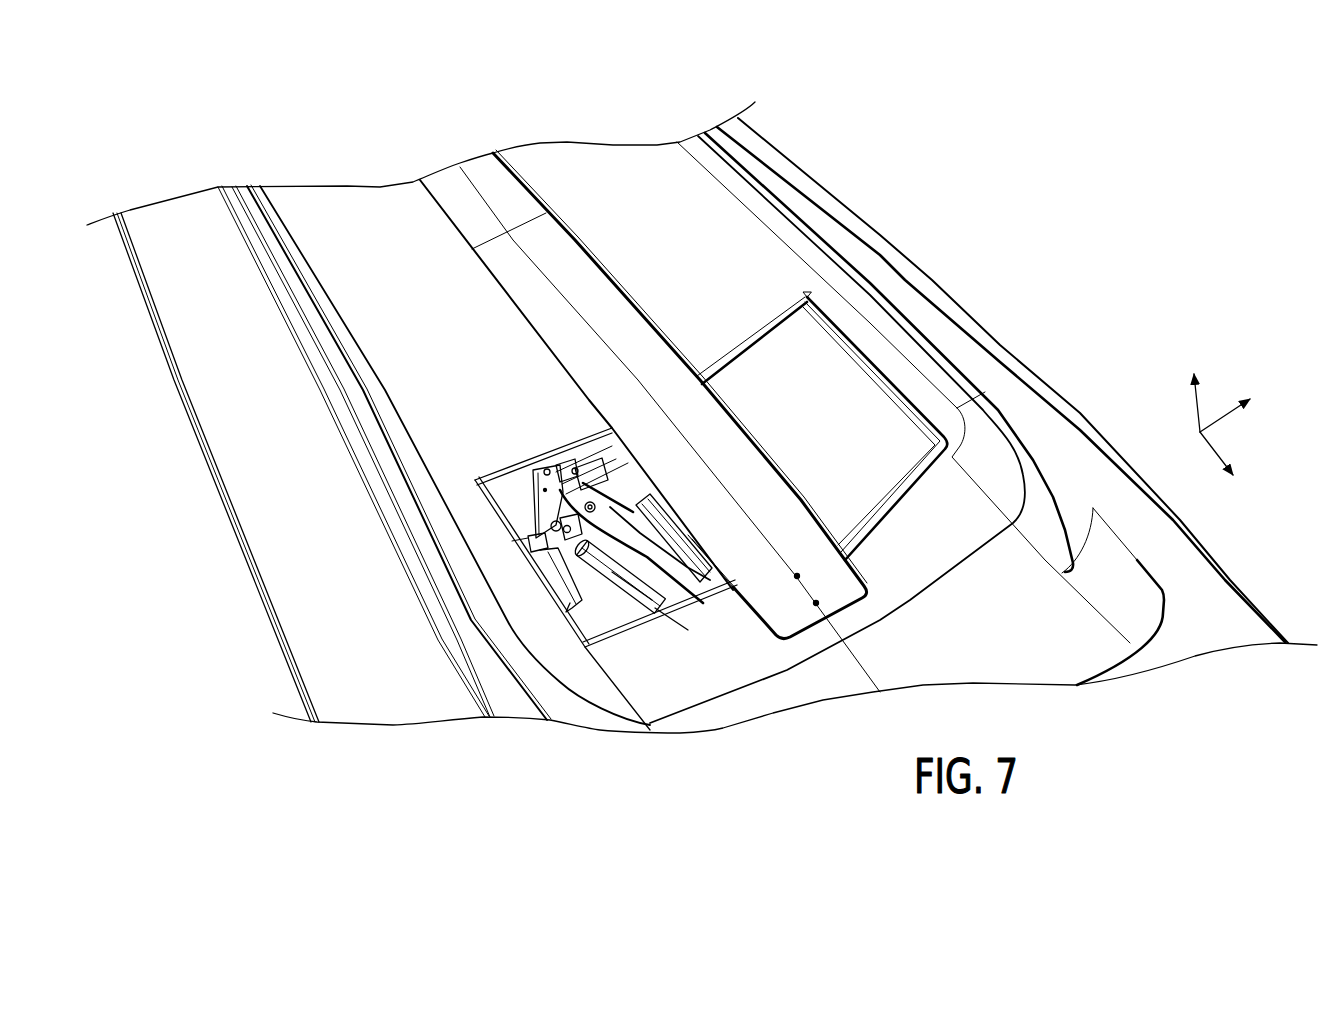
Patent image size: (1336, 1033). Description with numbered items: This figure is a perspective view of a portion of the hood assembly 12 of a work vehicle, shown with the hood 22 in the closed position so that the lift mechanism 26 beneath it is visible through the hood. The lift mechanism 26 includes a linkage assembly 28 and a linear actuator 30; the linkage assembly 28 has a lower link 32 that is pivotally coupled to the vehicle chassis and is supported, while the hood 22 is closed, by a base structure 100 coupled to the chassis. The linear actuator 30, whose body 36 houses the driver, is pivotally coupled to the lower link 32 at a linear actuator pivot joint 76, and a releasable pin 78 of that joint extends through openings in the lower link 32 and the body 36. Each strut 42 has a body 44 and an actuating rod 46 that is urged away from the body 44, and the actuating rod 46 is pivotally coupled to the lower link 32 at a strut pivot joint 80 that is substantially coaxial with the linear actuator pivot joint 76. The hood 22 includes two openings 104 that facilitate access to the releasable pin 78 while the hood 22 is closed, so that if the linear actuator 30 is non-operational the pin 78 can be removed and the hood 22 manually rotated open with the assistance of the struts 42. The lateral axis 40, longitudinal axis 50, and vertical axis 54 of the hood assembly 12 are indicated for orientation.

The hood assembly 12 is at (1087, 351).
The hood 22 is at (962, 338).
The lift mechanism 26 is at (583, 622).
The linkage assembly 28 is at (606, 615).
The linear actuator 30 is at (681, 507).
The lower link 32 is at (547, 502).
The body 36 is at (637, 508).
The lateral axis 40 is at (1222, 416).
The strut 42 is at (640, 610).
The body 44 is at (658, 612).
The actuating rod 46 is at (553, 560).
The longitudinal axis 50 is at (1220, 448).
The vertical axis 54 is at (1201, 406).
The linear actuator pivot joint 76 is at (585, 465).
The releasable pin 78 is at (545, 478).
The strut pivot joint 80 is at (526, 543).
The base structure 100 is at (553, 593).
The openings 104 is at (770, 460).